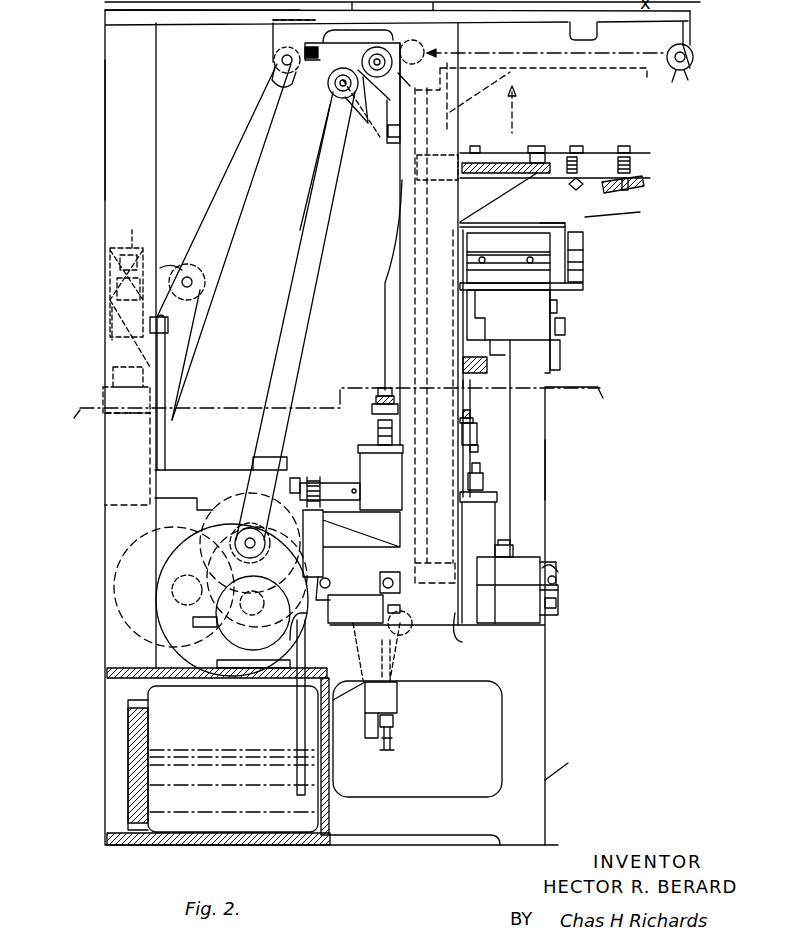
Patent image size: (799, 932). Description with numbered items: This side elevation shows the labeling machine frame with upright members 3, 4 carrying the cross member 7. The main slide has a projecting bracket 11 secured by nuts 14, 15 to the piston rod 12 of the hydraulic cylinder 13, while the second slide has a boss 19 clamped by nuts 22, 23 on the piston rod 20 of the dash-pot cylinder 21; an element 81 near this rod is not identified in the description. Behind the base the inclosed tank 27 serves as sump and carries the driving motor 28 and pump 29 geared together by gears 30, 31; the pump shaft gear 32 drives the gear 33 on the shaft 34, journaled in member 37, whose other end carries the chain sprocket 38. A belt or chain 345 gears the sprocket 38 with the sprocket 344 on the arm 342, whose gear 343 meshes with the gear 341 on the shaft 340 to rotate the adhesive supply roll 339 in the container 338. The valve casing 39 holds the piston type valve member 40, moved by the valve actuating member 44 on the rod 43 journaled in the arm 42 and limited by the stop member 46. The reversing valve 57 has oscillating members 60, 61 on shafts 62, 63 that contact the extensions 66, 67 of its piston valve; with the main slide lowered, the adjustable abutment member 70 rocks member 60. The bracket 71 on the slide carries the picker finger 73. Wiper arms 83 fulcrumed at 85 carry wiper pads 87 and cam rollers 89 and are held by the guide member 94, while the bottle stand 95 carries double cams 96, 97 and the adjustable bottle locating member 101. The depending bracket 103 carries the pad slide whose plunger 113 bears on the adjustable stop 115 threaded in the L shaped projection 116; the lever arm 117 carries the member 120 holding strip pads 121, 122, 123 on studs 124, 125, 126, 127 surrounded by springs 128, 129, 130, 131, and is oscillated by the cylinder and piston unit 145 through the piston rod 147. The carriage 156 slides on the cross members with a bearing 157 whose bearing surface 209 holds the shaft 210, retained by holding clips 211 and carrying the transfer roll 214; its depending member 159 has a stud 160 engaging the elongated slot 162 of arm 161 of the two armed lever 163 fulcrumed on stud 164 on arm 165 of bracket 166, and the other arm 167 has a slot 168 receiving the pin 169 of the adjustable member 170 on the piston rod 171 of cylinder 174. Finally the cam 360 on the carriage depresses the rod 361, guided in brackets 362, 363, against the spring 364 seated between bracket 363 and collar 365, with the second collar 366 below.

The upright member 3 is at (339, 584).
The upright member 4 is at (105, 112).
The cross member 7 is at (107, 15).
The projecting bracket 11 is at (372, 414).
The piston rod 12 is at (384, 388).
The hydraulic cylinder 13 is at (365, 463).
The nut 14 is at (376, 400).
The nut 15 is at (378, 428).
The projecting boss 19 is at (478, 433).
The piston rod 20 is at (469, 410).
The cylinder 21 is at (483, 530).
The nut 22 is at (474, 420).
The nut 23 is at (479, 449).
The inclosed tank 27 is at (167, 693).
The driving motor 28 is at (167, 540).
The pump 29 is at (265, 675).
The gear 30 is at (186, 600).
The gear 31 is at (306, 626).
The gear 32 is at (263, 665).
The gear 33 is at (225, 508).
The shaft 34 is at (217, 540).
The member 37 is at (160, 633).
The chain sprocket 38 is at (262, 515).
The valve casing 39 is at (544, 618).
The piston type valve member 40 is at (559, 602).
The arm 42 is at (544, 560).
The rod 43 is at (558, 580).
The valve actuating member 44 is at (559, 588).
The stop member 46 is at (561, 572).
The reversing valve 57 is at (342, 618).
The oscillating member 60 is at (381, 580).
The oscillating member 61 is at (331, 580).
The shaft 62 is at (396, 588).
The shaft 63 is at (333, 585).
The extension 66 is at (396, 606).
The extension 67 is at (301, 647).
The adjustable abutment member 70 is at (390, 570).
The bracket 71 is at (480, 197).
The picker finger member 73 is at (648, 176).
The fitting 81 is at (483, 475).
The wiper arm 83 is at (533, 305).
The fulcrum 85 is at (558, 307).
The wiper pad 87 is at (527, 236).
The cam roller 89 is at (565, 325).
The guide member 94 is at (479, 371).
The bottle stand 95 is at (546, 463).
The double cam 96 is at (561, 347).
The double cam 97 is at (585, 247).
The bottle locating member 101 is at (565, 222).
The depending bracket 103 is at (399, 702).
The plunger 113 is at (394, 720).
The adjustable stop 115 is at (392, 747).
The L shaped projection 116 is at (372, 738).
The lever arm 117 is at (385, 323).
The pad carrying member 120 is at (604, 152).
The strip pad 121 is at (536, 147).
The strip pad 122 is at (578, 186).
The strip pad 123 is at (662, 185).
The projecting stud 124 is at (475, 146).
The projecting stud 125 is at (541, 150).
The projecting stud 126 is at (582, 154).
The projecting stud 127 is at (629, 148).
The spring 128 is at (484, 162).
The spring 129 is at (572, 150).
The spring 130 is at (583, 165).
The spring 131 is at (626, 183).
The cylinder and piston unit 145 is at (183, 478).
The piston rod 147 is at (340, 470).
The carriage 156 is at (690, 12).
The bearing 157 is at (692, 35).
The depending member 159 is at (273, 37).
The stud 160 is at (278, 60).
The lever arm 161 is at (246, 128).
The elongated slot 162 is at (272, 78).
The two armed lever 163 is at (203, 280).
The stud 164 is at (195, 288).
The arm 165 is at (205, 355).
The bracket 166 is at (164, 393).
The lever arm 167 is at (177, 262).
The elongated slot 168 is at (137, 279).
The pin 169 is at (110, 262).
The adjustable member 170 is at (127, 229).
The piston rod 171 is at (113, 355).
The cylinder 174 is at (103, 455).
The bearing surface 209 is at (689, 65).
The shaft 210 is at (693, 51).
The holding clip 211 is at (677, 72).
The transfer roll 214 is at (692, 60).
The container 338 is at (373, 125).
The supply roll 339 is at (359, 61).
The shaft 340 is at (418, 43).
The gear 341 is at (421, 75).
The arm 342 is at (343, 100).
The gear 343 is at (323, 100).
The sprocket 344 is at (325, 120).
The belt or chain 345 is at (335, 245).
The cam 360 is at (598, 36).
The rod 361 is at (307, 225).
The bracket 362 is at (325, 33).
The bracket 363 is at (357, 523).
The spring 364 is at (291, 443).
The collar 365 is at (311, 477).
The second collar 366 is at (276, 541).